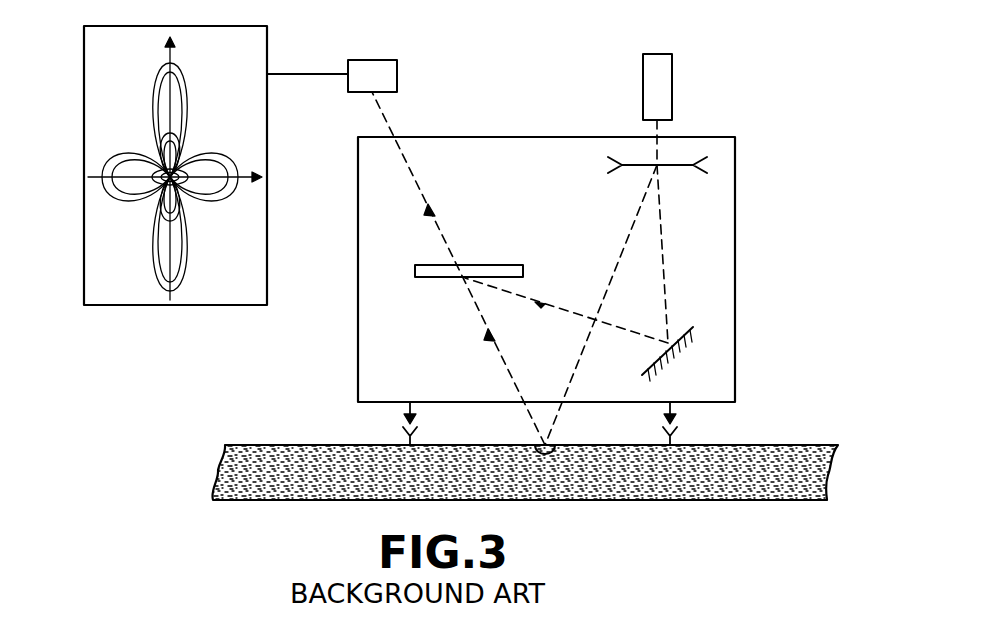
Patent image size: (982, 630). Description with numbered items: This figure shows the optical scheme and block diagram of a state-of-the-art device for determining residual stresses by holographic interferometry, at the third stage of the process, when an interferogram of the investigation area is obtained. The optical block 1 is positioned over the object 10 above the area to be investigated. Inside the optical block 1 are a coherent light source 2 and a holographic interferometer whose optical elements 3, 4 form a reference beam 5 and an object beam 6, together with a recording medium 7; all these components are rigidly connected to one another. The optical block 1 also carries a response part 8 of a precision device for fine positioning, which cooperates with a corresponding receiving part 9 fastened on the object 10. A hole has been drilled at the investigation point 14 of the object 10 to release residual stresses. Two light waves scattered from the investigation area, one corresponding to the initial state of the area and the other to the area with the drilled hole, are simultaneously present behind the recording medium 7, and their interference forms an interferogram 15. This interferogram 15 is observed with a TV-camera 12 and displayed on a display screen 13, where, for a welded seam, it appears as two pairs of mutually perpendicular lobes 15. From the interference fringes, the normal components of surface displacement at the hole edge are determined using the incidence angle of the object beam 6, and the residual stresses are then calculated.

The optical block 1 is at (735, 240).
The coherent light source 2 is at (672, 70).
The optical element 3 is at (644, 168).
The optical element 4 is at (677, 354).
The reference beam 5 is at (566, 310).
The object beam 6 is at (601, 305).
The recording medium 7 is at (460, 275).
The response part 8 is at (540, 417).
The receiving part 9 is at (543, 432).
The object 10 is at (785, 500).
The TV-camera 12 is at (372, 60).
The display screen 13 is at (118, 305).
The investigation point 14 is at (552, 447).
The interferogram 15 is at (112, 193).